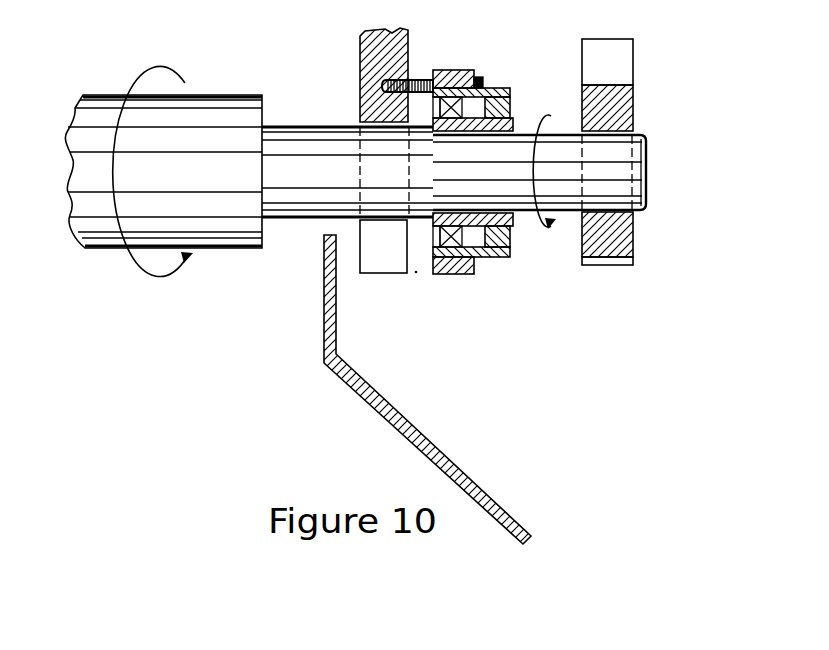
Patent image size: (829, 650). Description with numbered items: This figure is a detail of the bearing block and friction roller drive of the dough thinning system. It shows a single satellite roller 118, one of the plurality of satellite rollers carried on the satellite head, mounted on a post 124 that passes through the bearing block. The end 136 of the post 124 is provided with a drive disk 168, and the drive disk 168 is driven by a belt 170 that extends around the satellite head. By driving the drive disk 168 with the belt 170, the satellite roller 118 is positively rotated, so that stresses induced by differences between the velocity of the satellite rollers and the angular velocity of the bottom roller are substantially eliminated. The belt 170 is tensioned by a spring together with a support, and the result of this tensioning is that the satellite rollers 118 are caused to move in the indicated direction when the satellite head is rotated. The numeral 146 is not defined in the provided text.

The satellite roller 118 is at (112, 93).
The post 124 is at (298, 219).
The end of post 136 is at (632, 170).
The mounting plate 146 is at (397, 413).
The drive disk 168 is at (623, 233).
The belt 170 is at (605, 260).